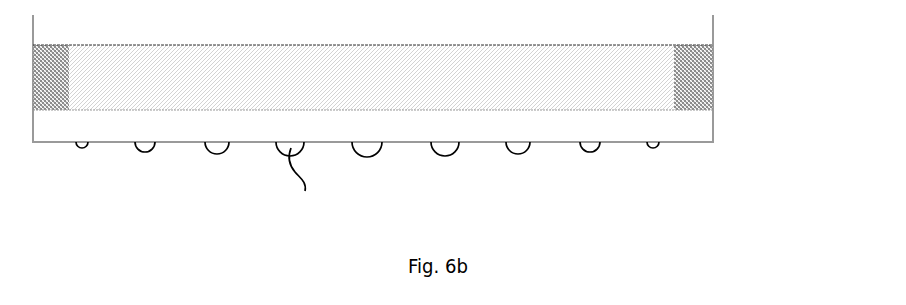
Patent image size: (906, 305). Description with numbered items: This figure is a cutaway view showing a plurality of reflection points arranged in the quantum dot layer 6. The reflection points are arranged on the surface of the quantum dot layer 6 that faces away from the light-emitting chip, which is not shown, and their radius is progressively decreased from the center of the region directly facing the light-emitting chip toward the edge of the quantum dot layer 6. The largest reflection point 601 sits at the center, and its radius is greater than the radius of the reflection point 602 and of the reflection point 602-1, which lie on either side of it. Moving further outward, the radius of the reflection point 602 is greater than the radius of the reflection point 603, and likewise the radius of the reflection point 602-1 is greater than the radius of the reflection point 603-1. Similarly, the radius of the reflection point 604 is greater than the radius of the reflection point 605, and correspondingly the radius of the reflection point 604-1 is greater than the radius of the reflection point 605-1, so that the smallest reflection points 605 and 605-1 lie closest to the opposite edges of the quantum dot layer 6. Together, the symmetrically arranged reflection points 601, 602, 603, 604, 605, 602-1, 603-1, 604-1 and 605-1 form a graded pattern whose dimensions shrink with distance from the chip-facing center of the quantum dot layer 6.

The quantum dot layer 6 is at (693, 13).
The reflection point 601 is at (368, 148).
The reflection point 602 is at (446, 148).
The reflection point 603 is at (519, 148).
The reflection point 604 is at (591, 148).
The reflection point 605 is at (654, 146).
The reflection point 602-1 is at (300, 178).
The reflection point 603-1 is at (218, 148).
The reflection point 604-1 is at (146, 148).
The reflection point 605-1 is at (83, 146).